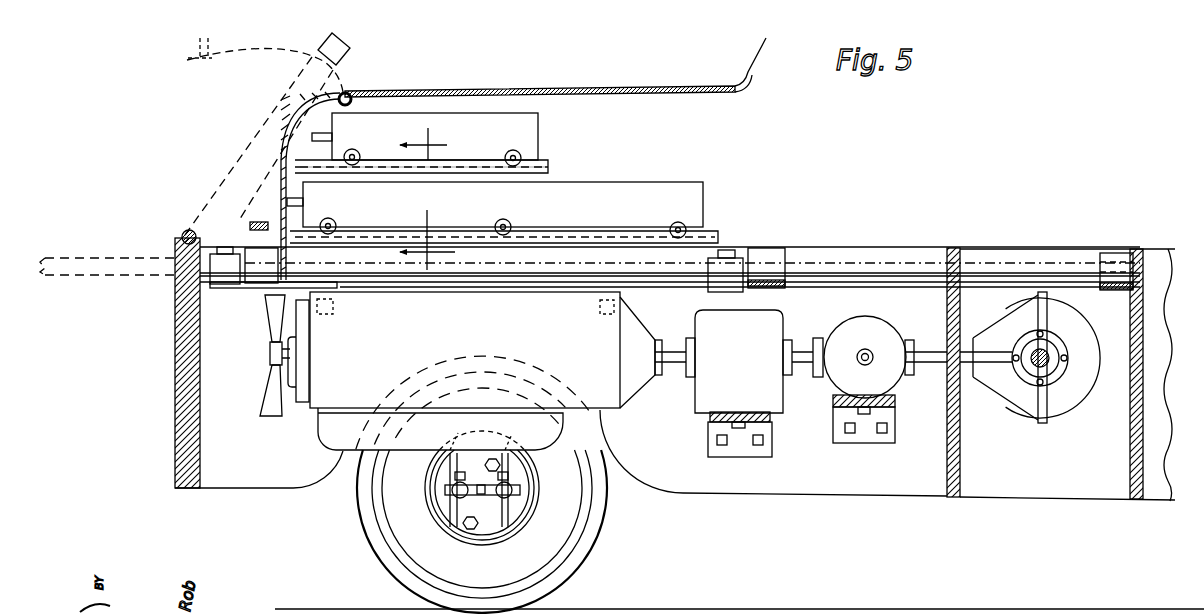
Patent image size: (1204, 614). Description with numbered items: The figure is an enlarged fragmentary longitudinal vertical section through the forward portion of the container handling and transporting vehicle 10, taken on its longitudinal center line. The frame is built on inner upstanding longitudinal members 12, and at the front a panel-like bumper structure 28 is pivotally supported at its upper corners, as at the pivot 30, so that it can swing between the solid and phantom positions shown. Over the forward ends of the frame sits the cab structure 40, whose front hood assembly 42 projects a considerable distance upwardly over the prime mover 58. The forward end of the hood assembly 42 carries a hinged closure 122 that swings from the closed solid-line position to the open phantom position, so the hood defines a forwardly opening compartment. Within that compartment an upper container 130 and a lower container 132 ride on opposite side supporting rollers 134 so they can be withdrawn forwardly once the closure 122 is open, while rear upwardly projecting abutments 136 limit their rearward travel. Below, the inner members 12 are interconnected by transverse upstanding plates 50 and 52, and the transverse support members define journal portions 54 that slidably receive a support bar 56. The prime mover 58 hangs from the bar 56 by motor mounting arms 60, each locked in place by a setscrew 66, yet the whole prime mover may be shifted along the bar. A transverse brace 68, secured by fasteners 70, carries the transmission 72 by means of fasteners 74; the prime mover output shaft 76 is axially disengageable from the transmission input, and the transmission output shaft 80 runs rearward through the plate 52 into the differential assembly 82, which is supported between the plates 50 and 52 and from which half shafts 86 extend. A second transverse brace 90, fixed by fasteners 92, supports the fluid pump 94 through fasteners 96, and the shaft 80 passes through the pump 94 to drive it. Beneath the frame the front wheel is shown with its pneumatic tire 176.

The container handling and transporting vehicle 10 is at (475, 156).
The inner upstanding longitudinal member 12 is at (1040, 470).
The front bumper structure 28 is at (178, 368).
The pivot 30 is at (183, 234).
The cab structure 40 is at (703, 80).
The front hood assembly 42 is at (456, 86).
The transverse upstanding plate 50 is at (1130, 476).
The transverse upstanding plate 52 is at (955, 488).
The journal portion 54 is at (265, 262).
The support bar 56 is at (865, 272).
The prime mover 58 is at (312, 420).
The motor mounting arm 60 is at (226, 287).
The setscrew 66 is at (228, 248).
The transverse brace 68 is at (710, 424).
The fastener 70 is at (752, 446).
The transmission 72 is at (690, 406).
The fastener 74 is at (745, 420).
The output shaft 76 is at (672, 356).
The output shaft 80 is at (801, 340).
The differential assembly 82 is at (1091, 402).
The half shaft 86 is at (1046, 348).
The second transverse brace 90 is at (884, 406).
The fastener 92 is at (877, 434).
The fluid pump 94 is at (908, 312).
The fastener 96 is at (856, 411).
The hinged closure 122 is at (293, 116).
The upper container 130 is at (528, 138).
The lower container 132 is at (612, 195).
The supporting roller 134 is at (513, 156).
The abutment 136 is at (530, 162).
The pneumatic tire 176 is at (395, 528).